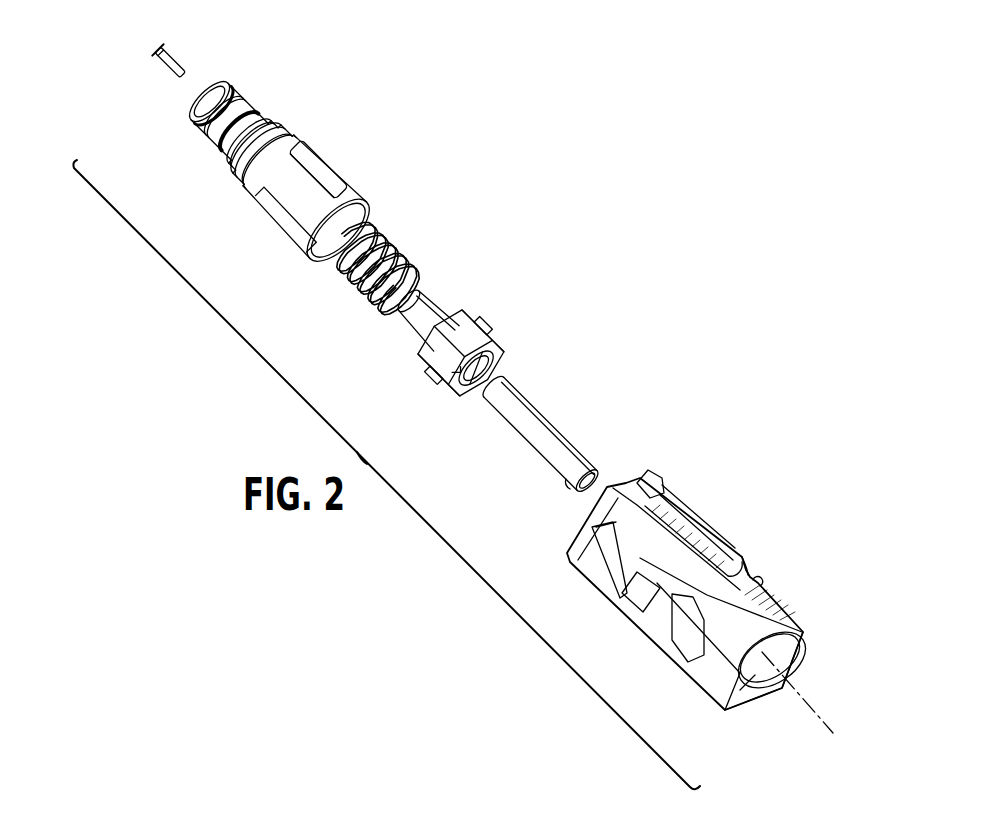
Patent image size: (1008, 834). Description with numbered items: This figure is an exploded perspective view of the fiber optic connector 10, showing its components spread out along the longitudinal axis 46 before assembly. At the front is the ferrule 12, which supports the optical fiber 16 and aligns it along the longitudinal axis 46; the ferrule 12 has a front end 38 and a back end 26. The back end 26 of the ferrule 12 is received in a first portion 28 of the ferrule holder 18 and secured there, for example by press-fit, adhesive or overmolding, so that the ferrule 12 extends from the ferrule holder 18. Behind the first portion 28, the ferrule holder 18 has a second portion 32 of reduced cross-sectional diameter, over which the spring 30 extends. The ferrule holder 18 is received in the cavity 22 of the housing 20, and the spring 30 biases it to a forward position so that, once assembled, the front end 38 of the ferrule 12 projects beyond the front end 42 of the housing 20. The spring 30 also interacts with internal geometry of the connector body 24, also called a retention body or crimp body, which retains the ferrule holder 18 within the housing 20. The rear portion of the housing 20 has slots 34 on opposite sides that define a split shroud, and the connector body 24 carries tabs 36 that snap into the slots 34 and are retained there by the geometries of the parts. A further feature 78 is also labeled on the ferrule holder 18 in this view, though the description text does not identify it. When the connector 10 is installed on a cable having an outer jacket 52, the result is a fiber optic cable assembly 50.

The connector 10 is at (519, 275).
The ferrule 12 is at (570, 435).
The optical fiber 16 is at (177, 57).
The ferrule holder 18 is at (446, 298).
The housing 20 is at (726, 542).
The cavity 22 is at (778, 656).
The connector body 24 is at (287, 122).
The back end 26 is at (492, 376).
The first portion 28 is at (462, 320).
The spring 30 is at (374, 237).
The second portion 32 is at (396, 326).
The slots 34 is at (668, 527).
The tabs 36 is at (323, 166).
The front end 38 is at (580, 494).
The front end 42 is at (803, 628).
The longitudinal axis 46 is at (797, 705).
The fiber optic cable assembly 50 is at (492, 330).
The outer jacket 52 is at (430, 377).
The opening 78 is at (468, 392).